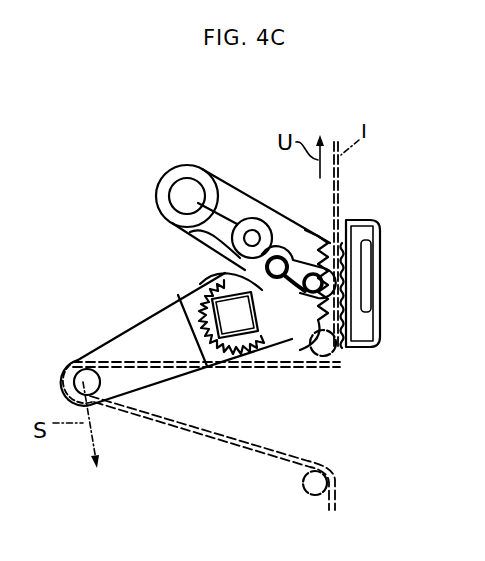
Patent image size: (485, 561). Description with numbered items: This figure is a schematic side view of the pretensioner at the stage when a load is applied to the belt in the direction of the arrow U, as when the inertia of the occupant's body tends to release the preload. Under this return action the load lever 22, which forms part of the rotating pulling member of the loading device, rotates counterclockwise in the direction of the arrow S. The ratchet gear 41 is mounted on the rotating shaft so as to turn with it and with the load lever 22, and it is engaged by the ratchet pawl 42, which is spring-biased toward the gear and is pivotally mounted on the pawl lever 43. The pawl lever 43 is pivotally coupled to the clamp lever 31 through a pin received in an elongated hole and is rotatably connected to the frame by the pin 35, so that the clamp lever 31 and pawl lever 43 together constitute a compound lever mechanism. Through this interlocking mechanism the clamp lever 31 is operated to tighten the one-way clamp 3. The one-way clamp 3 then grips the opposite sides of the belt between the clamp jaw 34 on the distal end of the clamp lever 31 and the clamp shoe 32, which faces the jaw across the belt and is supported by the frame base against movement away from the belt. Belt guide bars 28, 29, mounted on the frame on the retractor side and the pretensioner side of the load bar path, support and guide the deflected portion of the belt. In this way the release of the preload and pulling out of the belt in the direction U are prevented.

The one-way clamp 3 is at (347, 212).
The load lever 22 is at (108, 350).
The belt guide bar 28 is at (304, 487).
The belt guide bar 29 is at (332, 356).
The clamp lever 31 is at (202, 238).
The clamp shoe 32 is at (363, 236).
The clamp jaw 34 is at (310, 325).
The pin 35 is at (300, 248).
The ratchet gear 41 is at (246, 344).
The ratchet pawl 42 is at (224, 258).
The pawl lever 43 is at (280, 247).